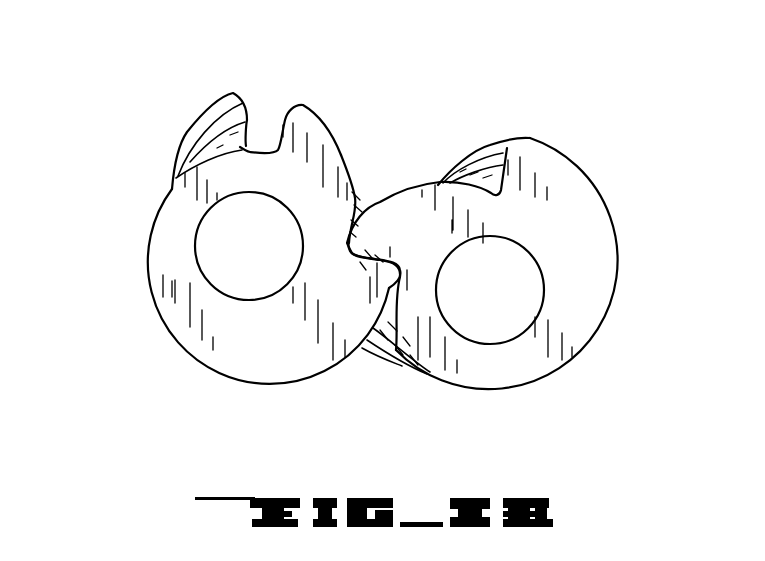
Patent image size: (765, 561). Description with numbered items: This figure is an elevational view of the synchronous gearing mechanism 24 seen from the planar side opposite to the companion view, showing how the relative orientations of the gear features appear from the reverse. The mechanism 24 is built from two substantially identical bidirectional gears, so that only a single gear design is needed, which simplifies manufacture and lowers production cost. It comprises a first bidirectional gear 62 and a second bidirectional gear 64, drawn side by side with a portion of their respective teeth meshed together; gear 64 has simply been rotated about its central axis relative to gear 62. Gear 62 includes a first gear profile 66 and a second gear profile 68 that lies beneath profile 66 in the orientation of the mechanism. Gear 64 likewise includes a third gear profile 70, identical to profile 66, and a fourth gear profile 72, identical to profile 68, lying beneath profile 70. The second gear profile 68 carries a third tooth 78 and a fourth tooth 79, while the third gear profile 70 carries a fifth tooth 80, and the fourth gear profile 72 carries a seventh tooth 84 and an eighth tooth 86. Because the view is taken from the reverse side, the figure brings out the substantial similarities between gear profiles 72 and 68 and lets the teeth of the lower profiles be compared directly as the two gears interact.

The synchronous gearing mechanism 24 is at (203, 385).
The first bidirectional gear 62 is at (563, 360).
The second bidirectional gear 64 is at (327, 362).
The first gear profile 66 is at (482, 173).
The second gear profile 68 is at (585, 284).
The third gear profile 70 is at (360, 207).
The fourth gear profile 72 is at (167, 242).
The third tooth 78 is at (373, 237).
The fourth tooth 79 is at (533, 155).
The fifth tooth 80 is at (194, 127).
The seventh tooth 84 is at (312, 132).
The eighth tooth 86 is at (383, 298).